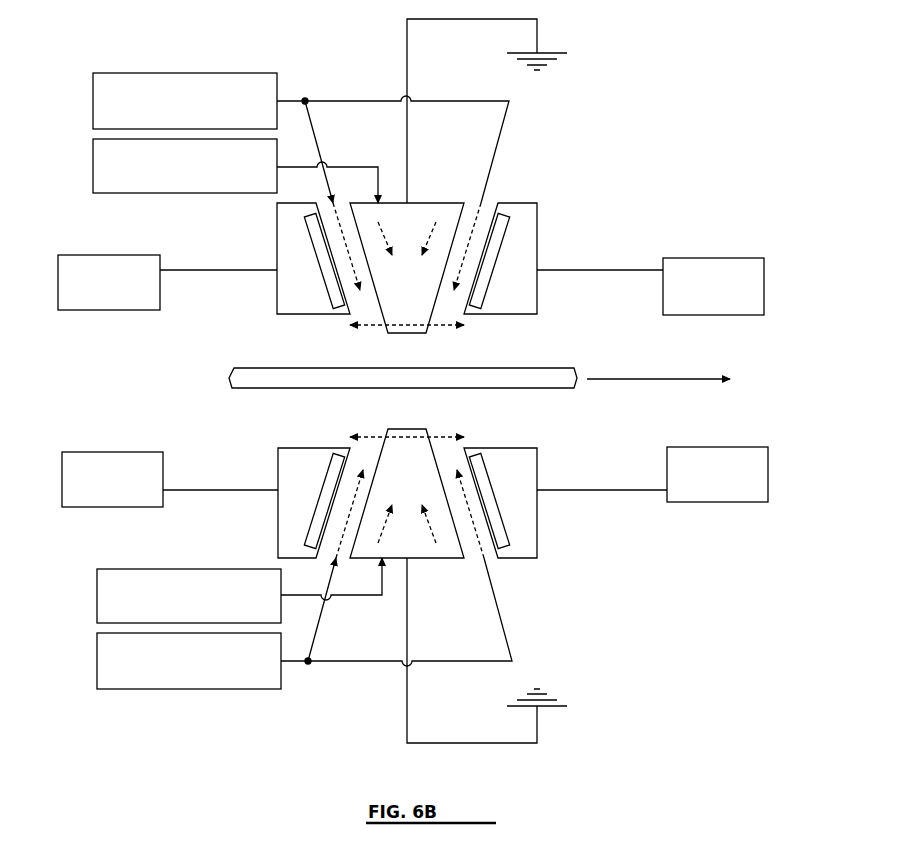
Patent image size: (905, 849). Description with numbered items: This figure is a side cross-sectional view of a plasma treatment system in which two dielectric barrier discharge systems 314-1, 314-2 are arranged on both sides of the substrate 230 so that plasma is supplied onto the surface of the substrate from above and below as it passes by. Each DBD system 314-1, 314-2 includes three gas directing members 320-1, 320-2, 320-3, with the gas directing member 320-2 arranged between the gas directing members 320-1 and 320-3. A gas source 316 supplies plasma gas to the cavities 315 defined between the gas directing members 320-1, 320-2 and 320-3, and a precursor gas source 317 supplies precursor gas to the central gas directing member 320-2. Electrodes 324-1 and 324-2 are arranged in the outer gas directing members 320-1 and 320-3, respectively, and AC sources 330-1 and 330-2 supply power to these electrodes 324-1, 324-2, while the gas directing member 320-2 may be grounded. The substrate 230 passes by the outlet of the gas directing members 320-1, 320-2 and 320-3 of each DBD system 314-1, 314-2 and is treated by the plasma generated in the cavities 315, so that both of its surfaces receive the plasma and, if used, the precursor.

The gas source 316 is at (215, 73).
The precursor gas source 317 is at (152, 193).
The gas directing member 320-1 is at (287, 233).
The gas directing member 320-2 is at (432, 202).
The gas directing member 320-3 is at (522, 254).
The electrode 324-1 is at (328, 290).
The electrode 324-2 is at (490, 277).
The AC source 330-1 is at (115, 311).
The AC source 330-2 is at (712, 258).
The substrate 230 is at (270, 389).
The cavities 315 is at (496, 191).
The DBD system 314-1 is at (628, 84).
The DBD system 314-2 is at (637, 625).